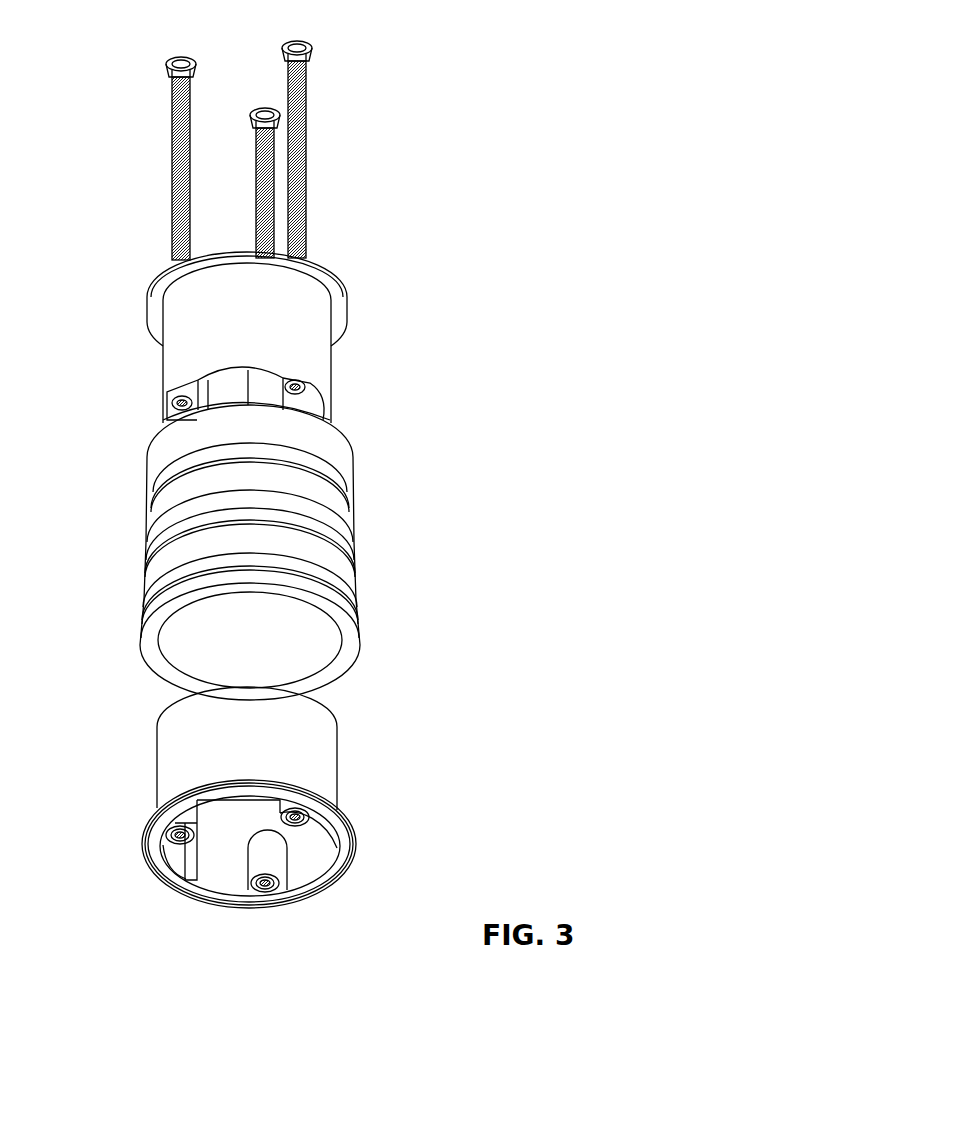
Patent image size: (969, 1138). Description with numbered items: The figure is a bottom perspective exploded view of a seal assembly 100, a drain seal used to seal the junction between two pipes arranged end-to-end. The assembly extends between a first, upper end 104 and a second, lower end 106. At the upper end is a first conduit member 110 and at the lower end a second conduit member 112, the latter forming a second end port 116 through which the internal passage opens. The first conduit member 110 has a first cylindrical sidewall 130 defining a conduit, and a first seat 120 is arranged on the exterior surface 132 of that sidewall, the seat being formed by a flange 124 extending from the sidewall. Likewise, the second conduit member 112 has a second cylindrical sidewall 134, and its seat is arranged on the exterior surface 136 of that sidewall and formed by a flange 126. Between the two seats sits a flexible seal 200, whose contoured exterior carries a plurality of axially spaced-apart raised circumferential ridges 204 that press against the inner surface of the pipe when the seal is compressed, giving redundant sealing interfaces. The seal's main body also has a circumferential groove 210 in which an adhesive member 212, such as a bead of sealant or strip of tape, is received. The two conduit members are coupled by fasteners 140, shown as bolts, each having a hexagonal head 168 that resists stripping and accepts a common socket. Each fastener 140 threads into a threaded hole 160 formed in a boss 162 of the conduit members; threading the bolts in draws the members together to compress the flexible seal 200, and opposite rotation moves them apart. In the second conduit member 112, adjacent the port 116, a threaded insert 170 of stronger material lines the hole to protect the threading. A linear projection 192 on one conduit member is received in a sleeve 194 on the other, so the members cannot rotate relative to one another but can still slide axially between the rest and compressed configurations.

The seal assembly 100 is at (618, 57).
The first end 104 is at (133, 186).
The second end 106 is at (330, 1035).
The first conduit member 110 is at (305, 329).
The second conduit member 112 is at (334, 825).
The second end port 116 is at (208, 888).
The first seat 120 is at (158, 292).
The flange 124 is at (342, 297).
The flange 126 is at (351, 833).
The first cylindrical sidewall 130 is at (331, 330).
The exterior surface 132 is at (264, 335).
The second cylindrical sidewall 134 is at (325, 772).
The exterior surface 136 is at (259, 757).
The fastener 140 is at (306, 172).
The threaded hole 160 is at (172, 404).
The boss 162 is at (284, 380).
The hexagonal head 168 is at (265, 110).
The threaded insert 170 is at (300, 823).
The linear projection 192 is at (186, 867).
The sleeve 194 is at (193, 389).
The flexible seal 200 is at (314, 552).
The raised circumferential ridges 204 is at (368, 597).
The circumferential groove 210 is at (150, 593).
The adhesive member 212 is at (150, 547).